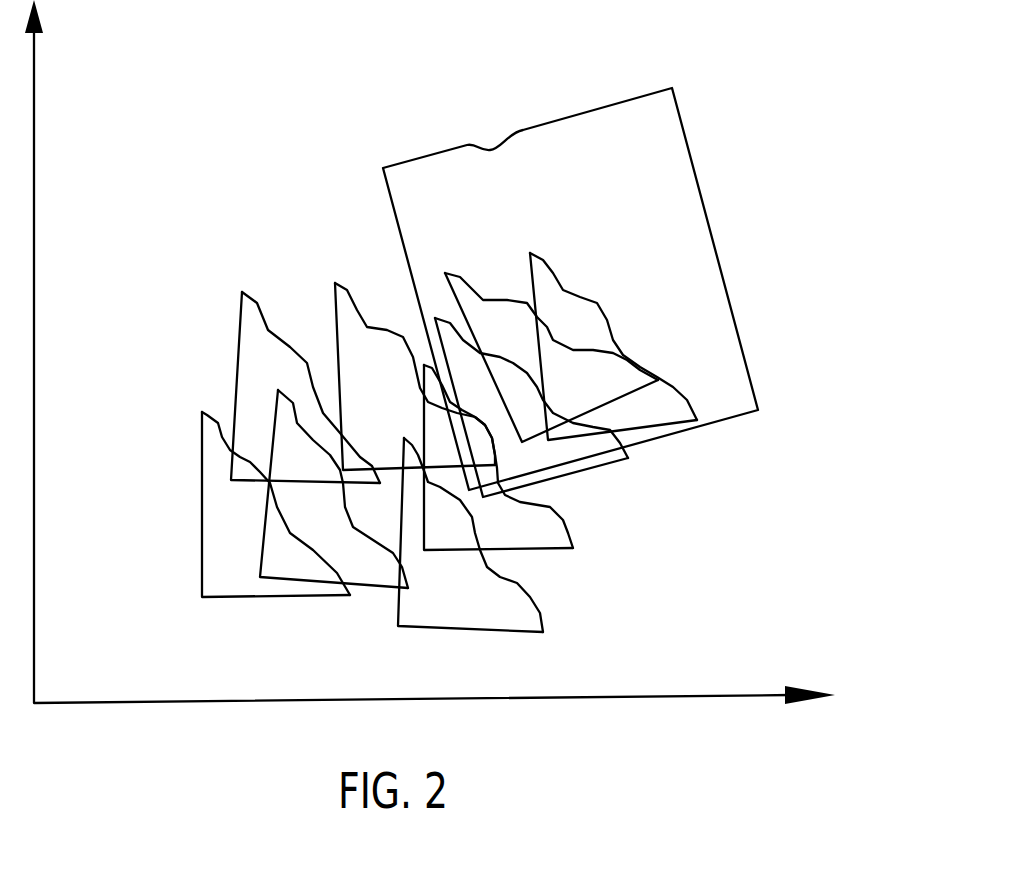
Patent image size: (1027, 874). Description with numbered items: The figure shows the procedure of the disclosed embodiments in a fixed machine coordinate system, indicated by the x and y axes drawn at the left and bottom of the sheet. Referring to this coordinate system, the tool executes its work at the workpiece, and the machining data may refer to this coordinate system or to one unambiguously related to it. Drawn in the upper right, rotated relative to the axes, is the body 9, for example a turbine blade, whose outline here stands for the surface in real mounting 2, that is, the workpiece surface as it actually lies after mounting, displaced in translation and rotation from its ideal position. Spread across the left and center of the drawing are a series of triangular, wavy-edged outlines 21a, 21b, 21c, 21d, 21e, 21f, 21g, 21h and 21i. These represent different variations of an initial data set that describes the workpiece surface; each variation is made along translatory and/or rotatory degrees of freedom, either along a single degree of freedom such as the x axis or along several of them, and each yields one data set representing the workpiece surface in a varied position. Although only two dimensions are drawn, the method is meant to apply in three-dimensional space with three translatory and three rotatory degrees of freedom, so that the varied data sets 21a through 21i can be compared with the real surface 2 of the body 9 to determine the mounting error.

The surface in real mounting 2 is at (745, 347).
The body 9 is at (662, 153).
The sub-image / tile 21a is at (225, 504).
The sub-image / tile 21b is at (334, 537).
The sub-image / tile 21c is at (259, 387).
The sub-image / tile 21d is at (521, 553).
The sub-image / tile 21e is at (369, 355).
The sub-image / tile 21f is at (544, 478).
The sub-image / tile 21g is at (569, 423).
The sub-image / tile 21h is at (551, 321).
The sub-image / tile 21i is at (613, 333).